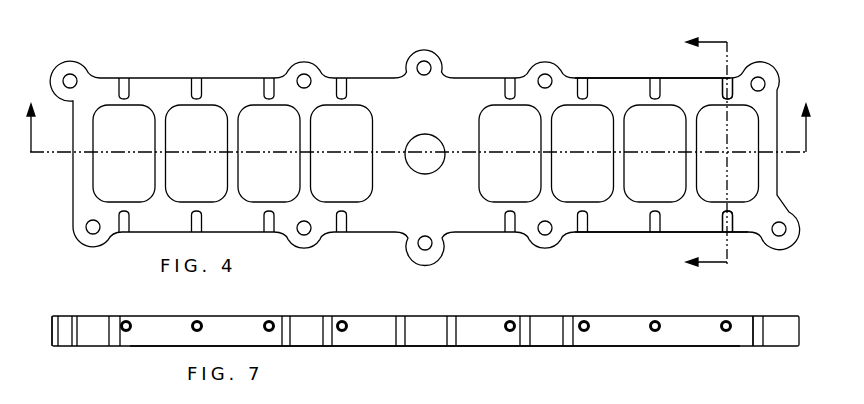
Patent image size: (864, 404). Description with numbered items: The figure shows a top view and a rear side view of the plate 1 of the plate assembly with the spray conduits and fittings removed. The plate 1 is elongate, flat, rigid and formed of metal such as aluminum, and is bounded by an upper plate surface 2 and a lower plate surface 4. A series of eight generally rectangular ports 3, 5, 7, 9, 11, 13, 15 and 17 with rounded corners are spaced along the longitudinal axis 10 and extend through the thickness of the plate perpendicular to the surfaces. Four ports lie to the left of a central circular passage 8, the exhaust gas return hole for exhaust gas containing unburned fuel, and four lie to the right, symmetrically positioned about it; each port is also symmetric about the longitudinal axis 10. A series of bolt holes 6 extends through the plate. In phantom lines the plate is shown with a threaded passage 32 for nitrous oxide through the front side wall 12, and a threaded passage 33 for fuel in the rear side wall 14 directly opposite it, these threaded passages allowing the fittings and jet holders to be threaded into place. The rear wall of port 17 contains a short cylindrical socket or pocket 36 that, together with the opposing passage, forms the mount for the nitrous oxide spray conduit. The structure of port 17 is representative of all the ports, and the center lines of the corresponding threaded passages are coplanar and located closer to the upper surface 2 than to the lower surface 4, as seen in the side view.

In FIG. 4, the plate 1 is at (162, 77).
In FIG. 7, the plate 1 is at (51, 320).
In FIG. 7, the upper plate surface 2 is at (88, 315).
In FIG. 4, the port 3 is at (124, 153).
In FIG. 7, the lower plate surface 4 is at (82, 347).
In FIG. 4, the port 5 is at (197, 153).
In FIG. 4, the bolt holes 6 is at (697, 153).
In FIG. 4, the port 7 is at (269, 153).
In FIG. 4, the central circular passage 8 is at (425, 154).
In FIG. 4, the port 9 is at (342, 153).
In FIG. 4, the longitudinal axis 10 is at (60, 153).
In FIG. 4, the port 11 is at (510, 153).
In FIG. 4, the front side wall 12 is at (623, 233).
In FIG. 7, the front side wall 12 is at (621, 333).
In FIG. 4, the port 13 is at (583, 153).
In FIG. 4, the rear side wall 14 is at (623, 77).
In FIG. 4, the port 15 is at (655, 153).
In FIG. 4, the port 17 is at (728, 153).
In FIG. 4, the threaded passage 32 is at (728, 233).
In FIG. 7, the threaded passage 32 is at (723, 337).
In FIG. 4, the threaded passage 33 is at (728, 77).
In FIG. 7, the cylindrical socket or pocket 36 is at (744, 402).